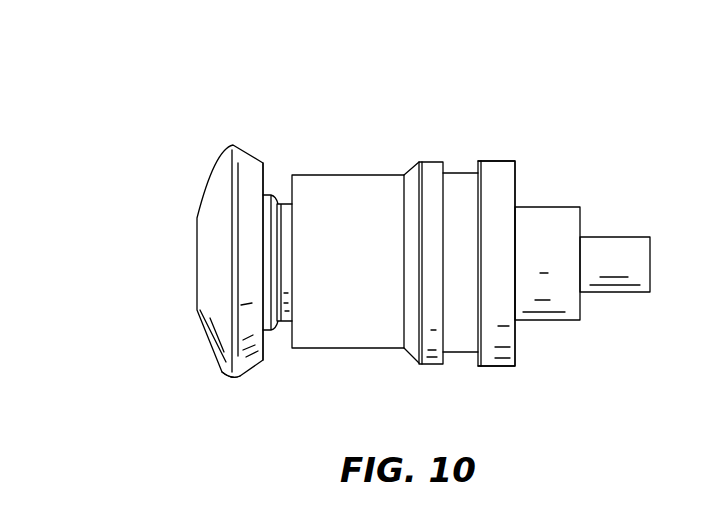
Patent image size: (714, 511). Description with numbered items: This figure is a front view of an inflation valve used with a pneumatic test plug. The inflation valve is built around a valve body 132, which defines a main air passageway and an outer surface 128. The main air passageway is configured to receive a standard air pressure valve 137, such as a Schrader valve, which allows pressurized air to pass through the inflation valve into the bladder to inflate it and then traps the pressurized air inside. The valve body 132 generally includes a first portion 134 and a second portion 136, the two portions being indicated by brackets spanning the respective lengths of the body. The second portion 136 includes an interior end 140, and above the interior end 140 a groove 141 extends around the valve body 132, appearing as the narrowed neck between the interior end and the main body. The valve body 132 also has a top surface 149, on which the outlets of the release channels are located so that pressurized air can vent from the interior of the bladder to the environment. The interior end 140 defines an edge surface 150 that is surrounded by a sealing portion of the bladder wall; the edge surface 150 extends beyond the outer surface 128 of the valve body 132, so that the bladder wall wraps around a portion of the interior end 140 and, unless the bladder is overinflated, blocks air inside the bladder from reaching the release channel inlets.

The outer surface 128 is at (370, 350).
The valve body 132 is at (508, 393).
The first portion 134 is at (518, 140).
The second portion 136 is at (270, 131).
The standard air pressure valve 137 is at (628, 203).
The interior end 140 is at (212, 202).
The groove 141 is at (276, 355).
The top surface 149 is at (515, 176).
The edge surface 150 is at (225, 380).